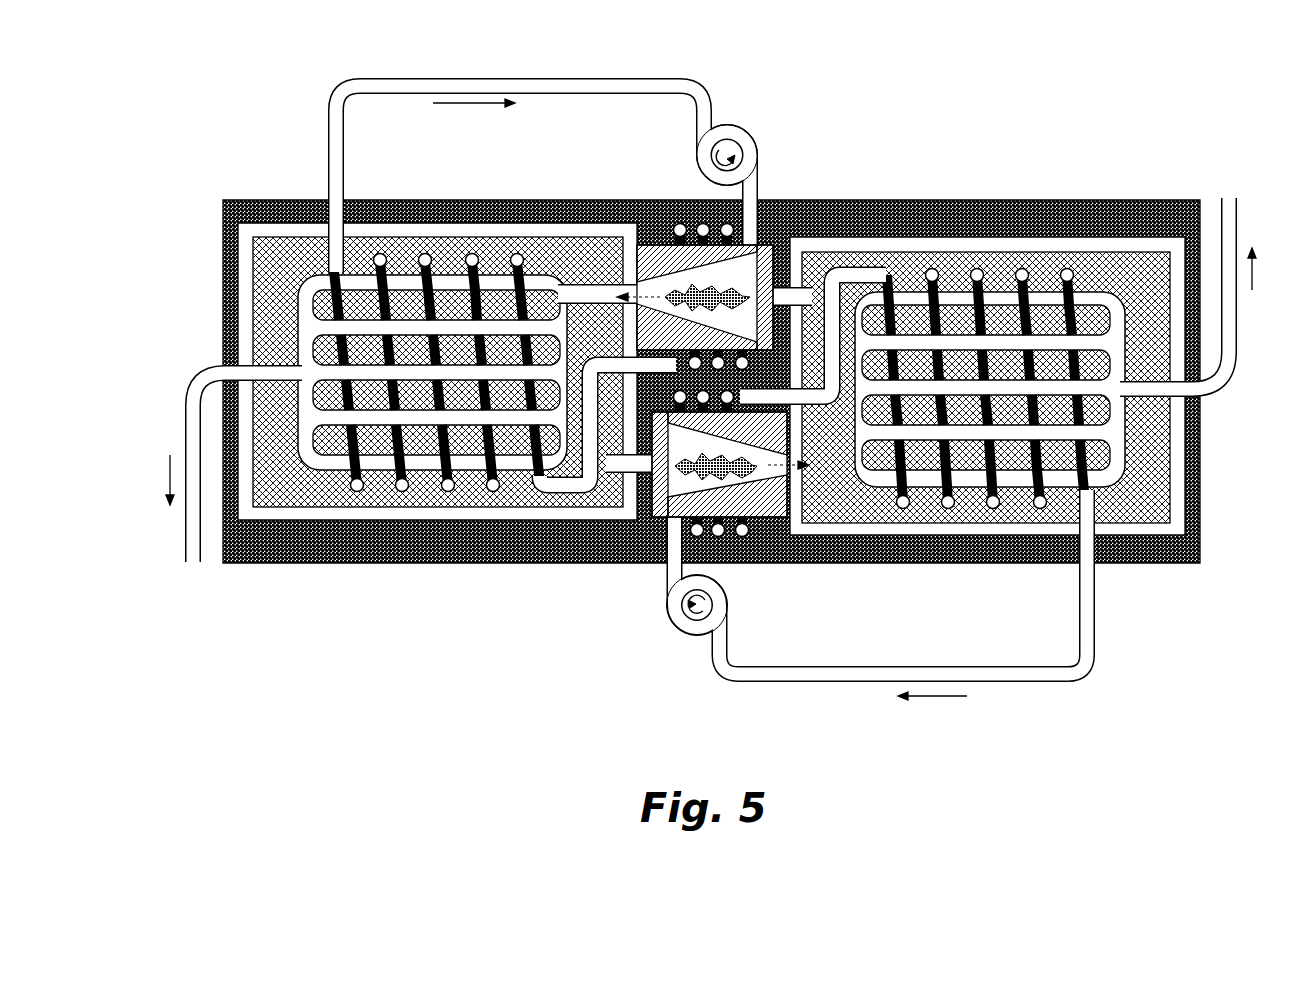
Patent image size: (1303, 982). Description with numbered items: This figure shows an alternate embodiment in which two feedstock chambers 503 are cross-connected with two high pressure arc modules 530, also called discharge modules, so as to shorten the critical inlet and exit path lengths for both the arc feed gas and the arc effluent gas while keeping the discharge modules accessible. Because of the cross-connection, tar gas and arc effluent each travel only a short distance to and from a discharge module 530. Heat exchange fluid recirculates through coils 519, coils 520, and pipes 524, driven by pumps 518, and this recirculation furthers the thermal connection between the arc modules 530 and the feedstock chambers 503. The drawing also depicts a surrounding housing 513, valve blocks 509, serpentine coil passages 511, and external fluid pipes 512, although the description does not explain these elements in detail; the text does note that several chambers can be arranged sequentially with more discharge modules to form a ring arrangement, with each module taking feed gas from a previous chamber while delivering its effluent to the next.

The feedstock chamber 503 is at (448, 237).
The valve block 509 is at (650, 247).
The serpentine coil 511 is at (335, 462).
The external fluid pipe 512 is at (180, 425).
The housing frame 513 is at (296, 207).
The pump 518 is at (762, 151).
The coil 519 is at (678, 232).
The coil 520 is at (490, 490).
The pipe 524 is at (550, 78).
The high pressure arc module 530 is at (768, 238).